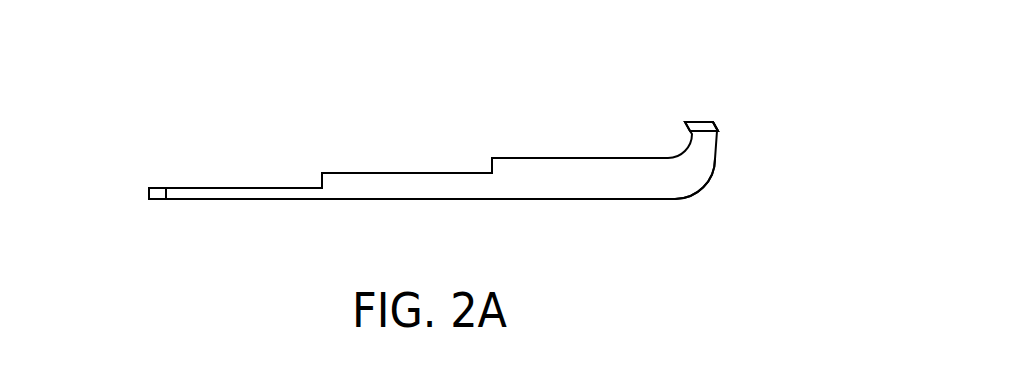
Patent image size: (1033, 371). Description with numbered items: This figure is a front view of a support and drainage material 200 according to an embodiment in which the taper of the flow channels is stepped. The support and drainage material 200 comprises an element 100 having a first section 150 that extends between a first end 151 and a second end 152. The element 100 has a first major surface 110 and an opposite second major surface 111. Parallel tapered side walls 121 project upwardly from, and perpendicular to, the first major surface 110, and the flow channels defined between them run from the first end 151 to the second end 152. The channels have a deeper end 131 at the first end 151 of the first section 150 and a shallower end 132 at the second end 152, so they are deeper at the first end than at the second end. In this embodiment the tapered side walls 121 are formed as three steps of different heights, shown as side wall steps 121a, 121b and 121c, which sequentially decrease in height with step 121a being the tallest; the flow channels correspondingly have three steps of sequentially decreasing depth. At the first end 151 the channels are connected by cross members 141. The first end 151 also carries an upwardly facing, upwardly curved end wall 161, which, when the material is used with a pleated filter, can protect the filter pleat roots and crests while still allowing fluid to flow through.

The element 100 is at (671, 204).
The first major surface 110 is at (537, 199).
The second major surface 111 is at (373, 173).
The tapered side walls 121 is at (560, 173).
The side wall step 121a is at (598, 172).
The side wall step 121b is at (403, 199).
The side wall step 121c is at (240, 199).
The deeper end 131 is at (598, 156).
The shallower end 132 is at (183, 184).
The cross members 141 is at (702, 122).
The first section 150 is at (272, 184).
The first end 151 is at (728, 115).
The second end 152 is at (142, 205).
The end wall 161 is at (705, 183).
The support and drainage material 200 is at (90, 113).